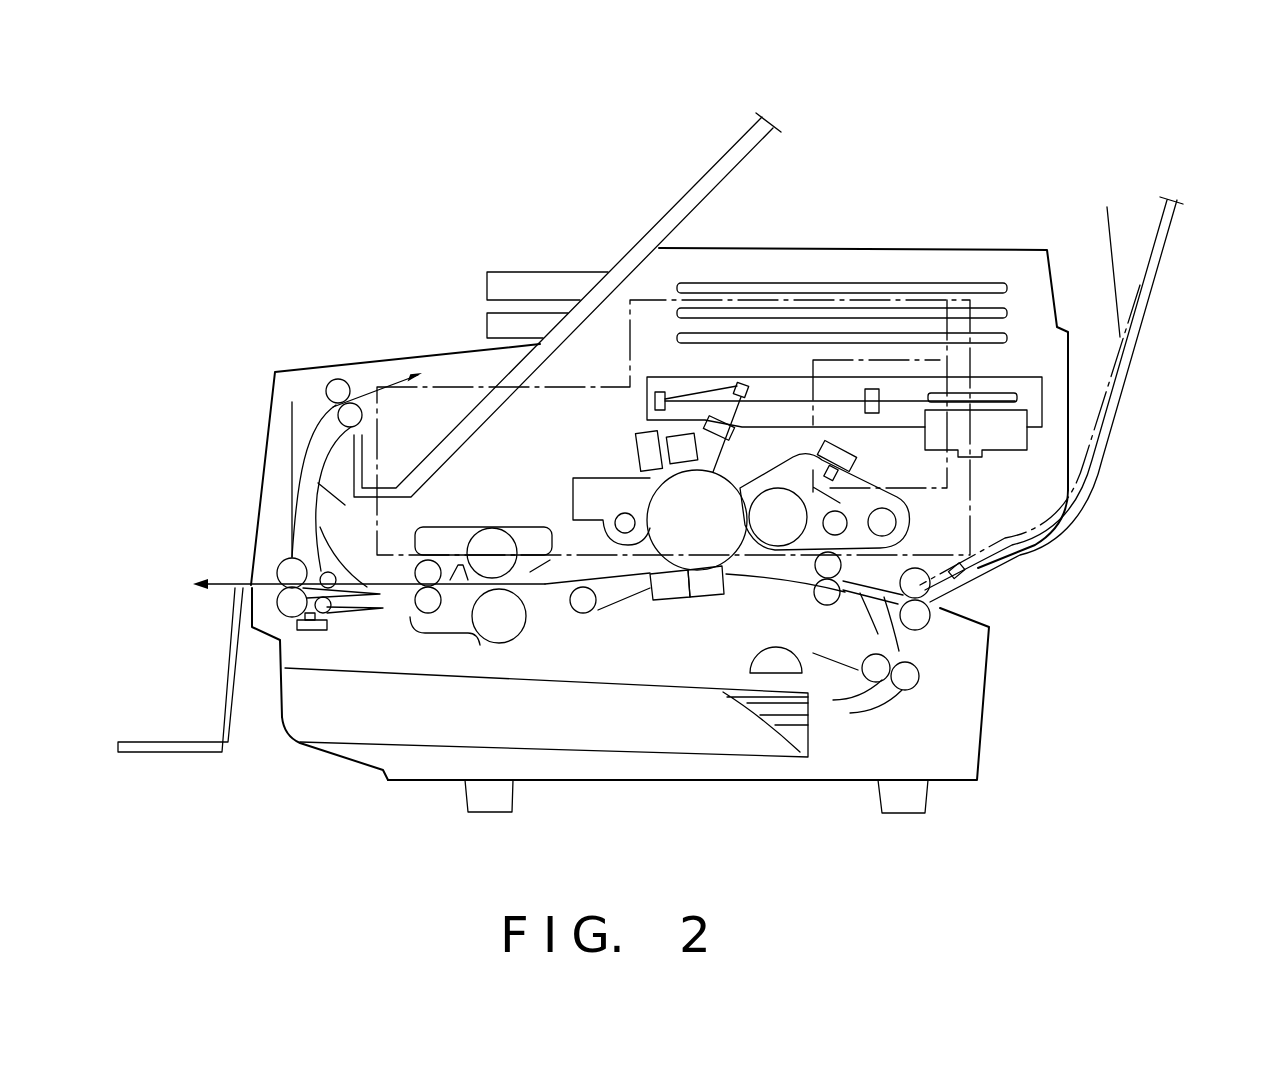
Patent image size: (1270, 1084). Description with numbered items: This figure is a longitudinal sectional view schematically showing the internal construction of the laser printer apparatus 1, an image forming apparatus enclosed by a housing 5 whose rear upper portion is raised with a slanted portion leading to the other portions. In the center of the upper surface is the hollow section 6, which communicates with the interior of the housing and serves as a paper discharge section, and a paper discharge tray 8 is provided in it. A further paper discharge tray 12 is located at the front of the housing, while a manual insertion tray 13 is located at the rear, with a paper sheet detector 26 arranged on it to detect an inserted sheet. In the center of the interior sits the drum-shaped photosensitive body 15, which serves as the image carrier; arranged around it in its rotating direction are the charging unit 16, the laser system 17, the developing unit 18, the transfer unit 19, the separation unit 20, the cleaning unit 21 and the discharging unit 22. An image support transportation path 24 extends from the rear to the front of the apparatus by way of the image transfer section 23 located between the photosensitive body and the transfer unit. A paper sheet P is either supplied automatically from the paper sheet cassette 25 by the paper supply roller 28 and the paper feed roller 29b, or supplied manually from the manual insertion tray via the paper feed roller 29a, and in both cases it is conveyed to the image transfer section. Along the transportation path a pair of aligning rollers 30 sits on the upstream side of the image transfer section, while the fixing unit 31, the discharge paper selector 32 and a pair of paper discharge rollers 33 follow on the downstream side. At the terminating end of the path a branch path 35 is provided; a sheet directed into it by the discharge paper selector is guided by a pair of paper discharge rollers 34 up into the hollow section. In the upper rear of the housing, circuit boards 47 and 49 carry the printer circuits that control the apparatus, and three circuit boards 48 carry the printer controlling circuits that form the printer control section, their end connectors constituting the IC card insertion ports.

The laser printer apparatus 1 is at (1108, 462).
The housing 5 is at (1037, 247).
The hollow section 6 is at (651, 427).
The paper discharge tray 8 is at (689, 190).
The paper discharge tray 12 is at (181, 762).
The manual insertion tray 13 is at (1171, 228).
The photosensitive body 15 is at (717, 488).
The charging unit 16 is at (677, 435).
The laser system 17 is at (937, 377).
The developing unit 18 is at (776, 467).
The transfer unit 19 is at (698, 598).
The separation unit 20 is at (660, 601).
The cleaning unit 21 is at (580, 478).
The discharging unit 22 is at (637, 442).
The image transfer section 23 is at (694, 570).
The image support transportation path 24 is at (568, 583).
The paper sheet cassette 25 is at (292, 723).
The paper sheet detector 26 is at (972, 560).
The paper supply roller 28 is at (787, 658).
The paper feed roller 29a is at (923, 628).
The paper feed roller 29b is at (903, 690).
The aligning rollers 30 is at (813, 591).
The fixing unit 31 is at (470, 527).
The discharge paper selector 32 is at (292, 566).
The paper discharge rollers 33 is at (276, 571).
The paper discharge rollers 34 is at (335, 385).
The branch path 35 is at (352, 562).
The circuit board 47 is at (772, 300).
The circuit boards 48 is at (848, 345).
The circuit board 49 is at (912, 368).
The paper sheet P is at (1145, 278).